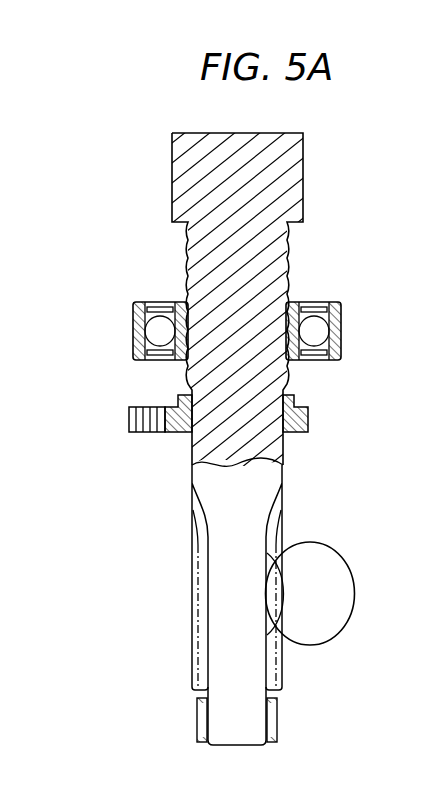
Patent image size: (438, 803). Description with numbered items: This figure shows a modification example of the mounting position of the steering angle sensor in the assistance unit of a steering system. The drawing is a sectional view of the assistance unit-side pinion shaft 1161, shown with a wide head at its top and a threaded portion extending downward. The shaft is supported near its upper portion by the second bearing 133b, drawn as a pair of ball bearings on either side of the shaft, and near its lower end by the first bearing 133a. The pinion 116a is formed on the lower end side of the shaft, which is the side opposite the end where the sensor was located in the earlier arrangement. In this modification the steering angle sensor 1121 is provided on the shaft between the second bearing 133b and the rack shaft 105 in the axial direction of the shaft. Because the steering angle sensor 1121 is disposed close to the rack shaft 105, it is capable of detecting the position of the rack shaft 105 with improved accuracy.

The assistance unit-side pinion shaft 1161 is at (331, 148).
The second bearing 133b is at (342, 333).
The steering angle sensor 1121 is at (308, 419).
The pinion 116a is at (192, 602).
The rack shaft 105 is at (347, 621).
The first bearing 133a is at (277, 722).